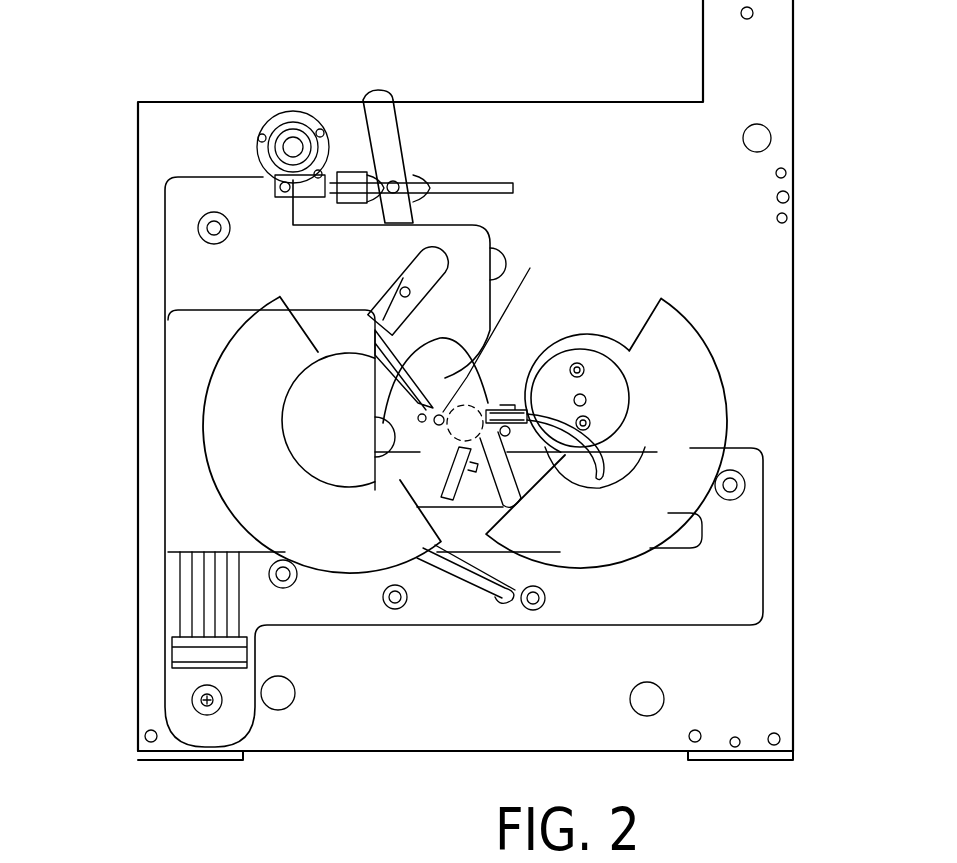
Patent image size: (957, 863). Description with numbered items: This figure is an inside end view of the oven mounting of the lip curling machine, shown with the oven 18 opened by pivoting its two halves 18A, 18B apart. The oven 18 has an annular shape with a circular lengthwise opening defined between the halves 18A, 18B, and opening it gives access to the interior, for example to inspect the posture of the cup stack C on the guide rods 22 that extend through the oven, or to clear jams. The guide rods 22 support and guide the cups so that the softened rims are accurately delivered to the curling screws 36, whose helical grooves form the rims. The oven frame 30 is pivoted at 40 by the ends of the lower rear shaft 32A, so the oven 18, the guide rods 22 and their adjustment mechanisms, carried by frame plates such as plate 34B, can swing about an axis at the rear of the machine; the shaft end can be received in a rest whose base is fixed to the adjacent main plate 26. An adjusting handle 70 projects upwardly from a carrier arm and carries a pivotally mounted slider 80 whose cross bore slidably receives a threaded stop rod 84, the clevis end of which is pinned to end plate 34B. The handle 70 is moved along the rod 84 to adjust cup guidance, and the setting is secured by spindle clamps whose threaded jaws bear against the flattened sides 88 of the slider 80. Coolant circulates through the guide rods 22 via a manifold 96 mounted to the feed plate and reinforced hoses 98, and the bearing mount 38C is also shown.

The oven 18 is at (457, 394).
The oven half 18A is at (205, 398).
The oven half 18B is at (712, 411).
The guide rods 22 is at (347, 450).
The main plate 26 is at (768, 305).
The oven frame 30 is at (378, 667).
The lower rear shaft 32A is at (206, 716).
The oven frame plate 34B is at (738, 590).
The curling screws 36 is at (542, 364).
The pivot bearing 38C is at (270, 120).
The pivot 40 is at (197, 698).
The adjusting handle 70 is at (400, 118).
The slider 80 is at (413, 160).
The threaded stop rod 84 is at (484, 180).
The flattened side 88 is at (350, 173).
The manifold 96 is at (178, 650).
The reinforced hoses 98 is at (398, 383).
The cup stack C is at (482, 487).